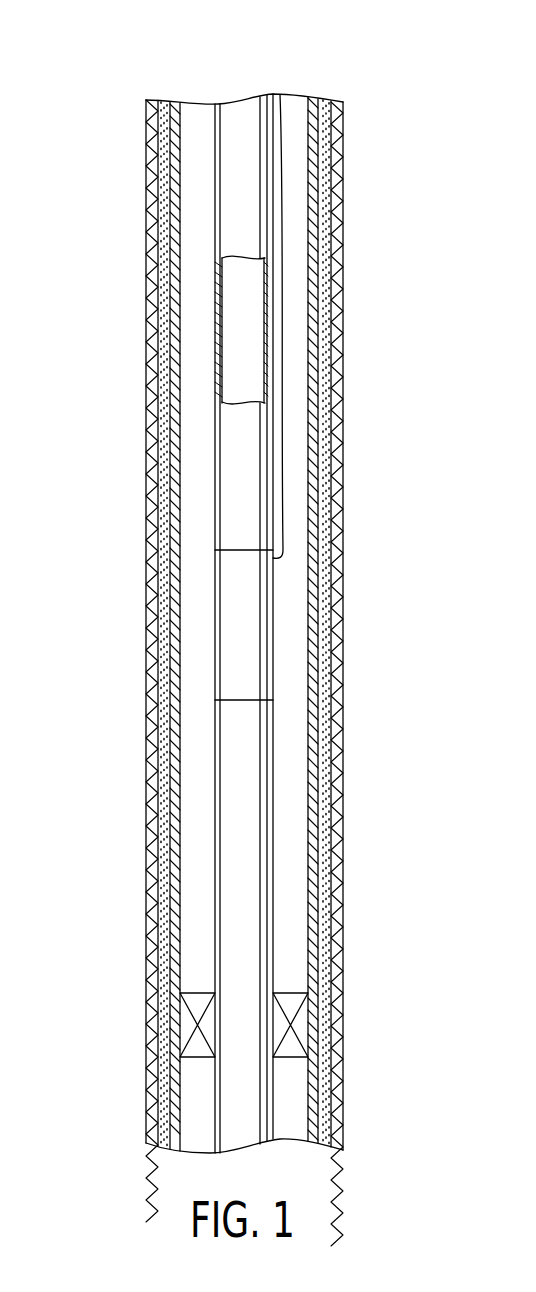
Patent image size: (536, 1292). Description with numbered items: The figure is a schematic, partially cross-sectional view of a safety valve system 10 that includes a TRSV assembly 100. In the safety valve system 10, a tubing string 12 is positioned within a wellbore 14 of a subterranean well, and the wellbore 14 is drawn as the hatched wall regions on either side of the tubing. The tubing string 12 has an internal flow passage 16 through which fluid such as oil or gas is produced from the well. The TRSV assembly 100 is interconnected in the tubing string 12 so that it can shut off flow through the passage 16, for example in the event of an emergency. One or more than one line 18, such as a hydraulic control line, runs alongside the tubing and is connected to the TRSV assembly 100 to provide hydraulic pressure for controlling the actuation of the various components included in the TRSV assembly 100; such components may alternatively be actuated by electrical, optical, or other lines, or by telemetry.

The safety valve system 10 is at (124, 67).
The tubing string 12 is at (190, 192).
The wellbore 14 is at (320, 762).
The internal flow passage 16 is at (240, 337).
The line 18 is at (285, 325).
The TRSV assembly 100 is at (272, 645).